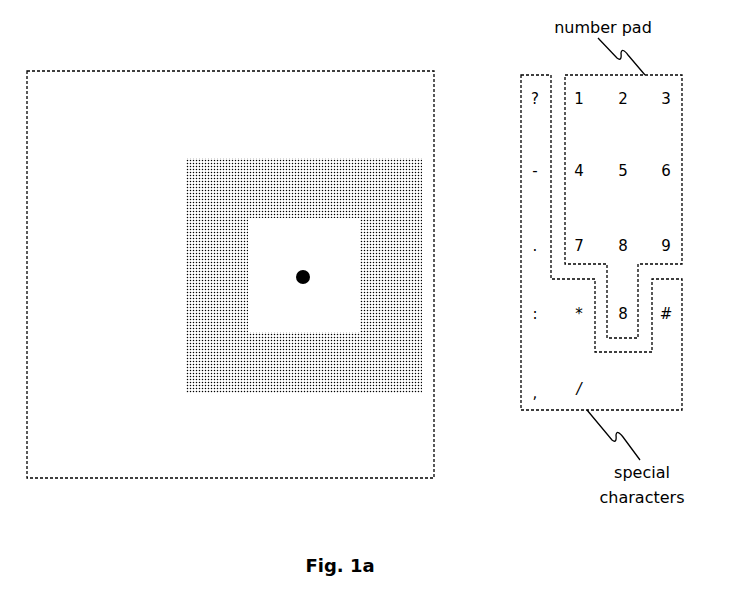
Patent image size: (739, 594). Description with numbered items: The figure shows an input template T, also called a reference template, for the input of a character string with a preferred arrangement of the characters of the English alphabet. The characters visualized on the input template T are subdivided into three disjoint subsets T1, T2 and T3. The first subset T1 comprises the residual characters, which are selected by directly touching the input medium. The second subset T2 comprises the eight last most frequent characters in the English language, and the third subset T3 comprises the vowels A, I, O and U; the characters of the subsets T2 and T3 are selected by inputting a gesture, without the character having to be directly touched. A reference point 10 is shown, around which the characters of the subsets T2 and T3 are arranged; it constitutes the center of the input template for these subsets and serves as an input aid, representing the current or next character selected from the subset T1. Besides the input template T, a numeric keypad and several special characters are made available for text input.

The input template T is at (257, 267).
The first subset T1 is at (366, 432).
The second subset T2 is at (398, 377).
The third subset T3 is at (347, 303).
The reference point 10 is at (315, 268).